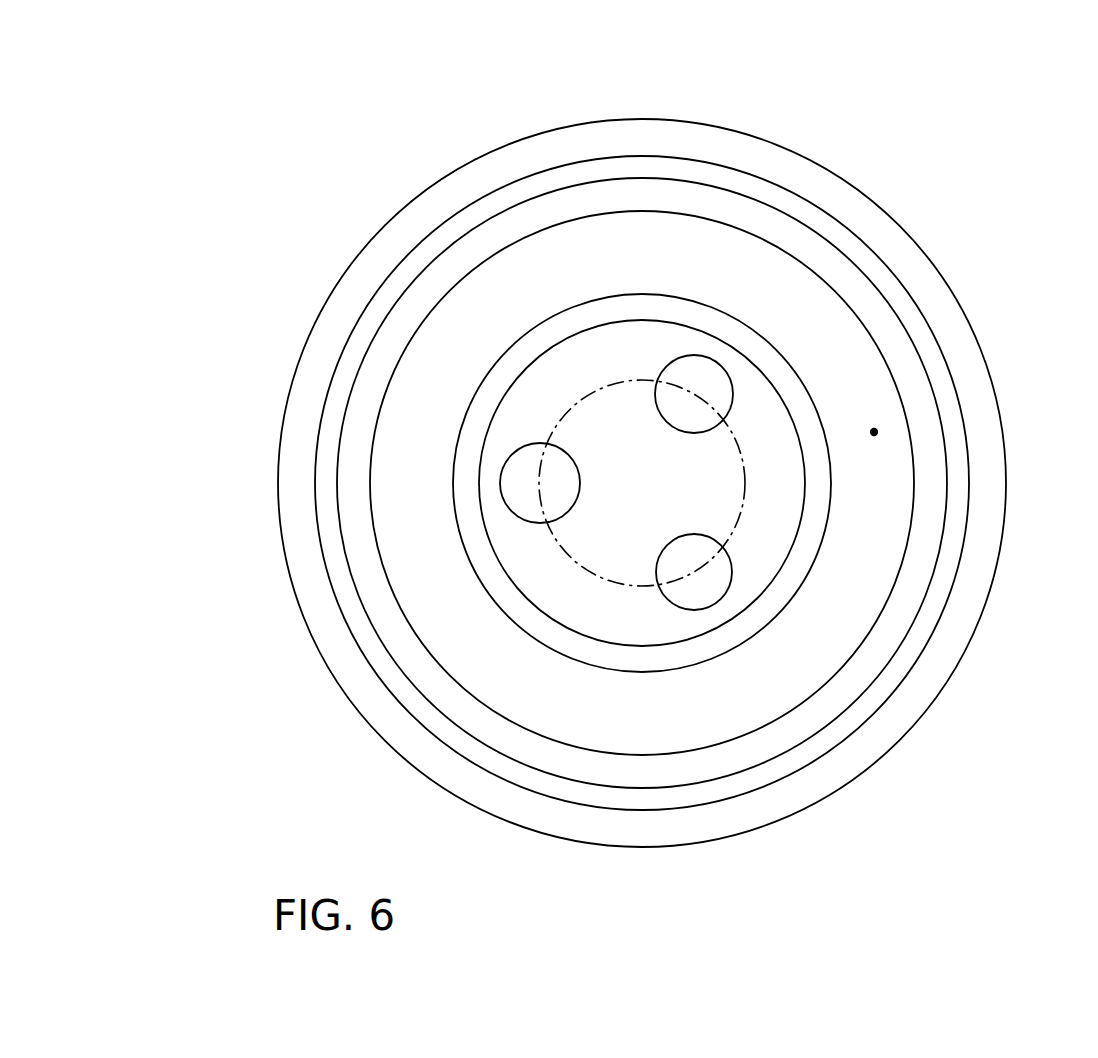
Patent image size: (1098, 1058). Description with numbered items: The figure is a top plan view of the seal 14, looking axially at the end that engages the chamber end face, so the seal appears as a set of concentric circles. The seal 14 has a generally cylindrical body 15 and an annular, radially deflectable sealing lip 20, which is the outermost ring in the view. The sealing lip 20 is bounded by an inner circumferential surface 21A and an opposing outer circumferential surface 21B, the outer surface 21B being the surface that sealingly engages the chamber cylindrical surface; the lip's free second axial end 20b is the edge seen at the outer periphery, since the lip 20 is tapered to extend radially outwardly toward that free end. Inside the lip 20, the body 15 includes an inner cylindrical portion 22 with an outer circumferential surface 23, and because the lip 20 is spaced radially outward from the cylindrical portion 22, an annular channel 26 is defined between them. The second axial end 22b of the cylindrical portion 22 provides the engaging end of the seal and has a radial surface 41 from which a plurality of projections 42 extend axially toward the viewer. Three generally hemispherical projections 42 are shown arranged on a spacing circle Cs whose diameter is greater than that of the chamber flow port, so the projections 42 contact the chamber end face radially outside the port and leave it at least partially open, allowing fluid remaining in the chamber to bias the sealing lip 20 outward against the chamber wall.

The seal 14 is at (263, 192).
The cylindrical body 15 is at (555, 108).
The sealing lip 20 is at (925, 232).
The lip second axial end 20b is at (812, 172).
The inner circumferential surface 21A is at (768, 242).
The outer circumferential surface 21B is at (950, 290).
The inner cylindrical portion 22 is at (830, 528).
The cylindrical portion second axial end 22b is at (578, 585).
The outer circumferential surface 23 is at (812, 577).
The annular channel 26 is at (874, 432).
The radial surface 41 is at (591, 352).
The projections 42 is at (722, 378).
The spacing circle Cs is at (748, 455).